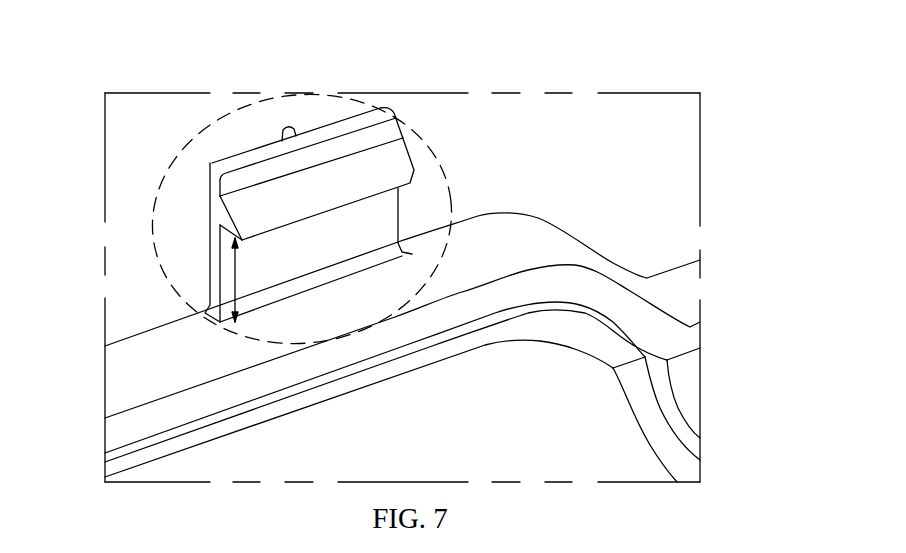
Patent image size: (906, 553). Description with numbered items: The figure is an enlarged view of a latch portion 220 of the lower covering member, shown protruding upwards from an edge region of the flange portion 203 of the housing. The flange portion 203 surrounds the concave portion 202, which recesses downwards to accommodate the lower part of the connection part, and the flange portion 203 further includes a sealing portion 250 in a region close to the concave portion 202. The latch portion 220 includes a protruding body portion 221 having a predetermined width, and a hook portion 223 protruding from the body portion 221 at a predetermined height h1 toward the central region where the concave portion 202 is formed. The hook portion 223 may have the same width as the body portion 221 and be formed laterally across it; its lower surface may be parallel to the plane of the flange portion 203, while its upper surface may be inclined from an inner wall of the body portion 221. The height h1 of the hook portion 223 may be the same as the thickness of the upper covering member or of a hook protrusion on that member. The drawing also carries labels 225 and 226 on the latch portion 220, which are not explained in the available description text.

The concave portion 202 is at (558, 433).
The flange portion 203 is at (547, 235).
The latch portion 220 is at (261, 189).
The body portion 221 is at (212, 262).
The hook portion 223 is at (393, 160).
The top face of protrusion 225 is at (373, 128).
The tab 226 is at (288, 124).
The sealing portion 250 is at (563, 283).
The predetermined height h1 is at (250, 280).